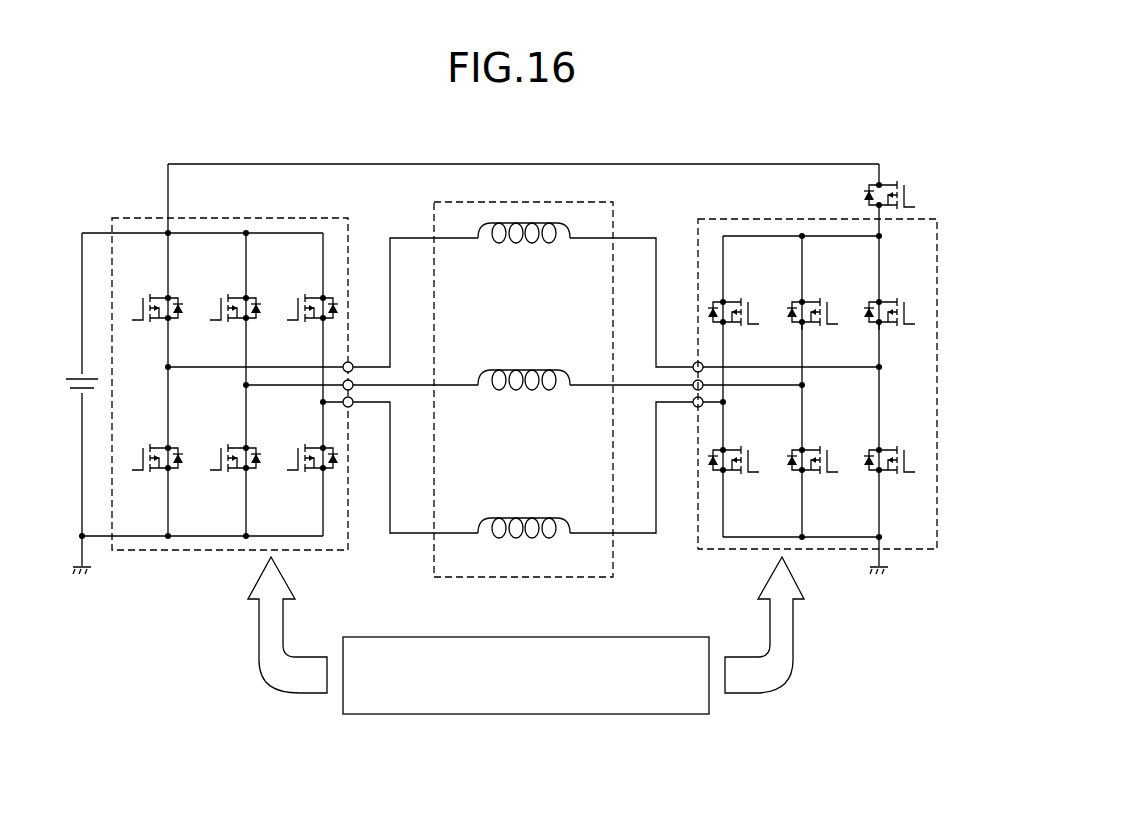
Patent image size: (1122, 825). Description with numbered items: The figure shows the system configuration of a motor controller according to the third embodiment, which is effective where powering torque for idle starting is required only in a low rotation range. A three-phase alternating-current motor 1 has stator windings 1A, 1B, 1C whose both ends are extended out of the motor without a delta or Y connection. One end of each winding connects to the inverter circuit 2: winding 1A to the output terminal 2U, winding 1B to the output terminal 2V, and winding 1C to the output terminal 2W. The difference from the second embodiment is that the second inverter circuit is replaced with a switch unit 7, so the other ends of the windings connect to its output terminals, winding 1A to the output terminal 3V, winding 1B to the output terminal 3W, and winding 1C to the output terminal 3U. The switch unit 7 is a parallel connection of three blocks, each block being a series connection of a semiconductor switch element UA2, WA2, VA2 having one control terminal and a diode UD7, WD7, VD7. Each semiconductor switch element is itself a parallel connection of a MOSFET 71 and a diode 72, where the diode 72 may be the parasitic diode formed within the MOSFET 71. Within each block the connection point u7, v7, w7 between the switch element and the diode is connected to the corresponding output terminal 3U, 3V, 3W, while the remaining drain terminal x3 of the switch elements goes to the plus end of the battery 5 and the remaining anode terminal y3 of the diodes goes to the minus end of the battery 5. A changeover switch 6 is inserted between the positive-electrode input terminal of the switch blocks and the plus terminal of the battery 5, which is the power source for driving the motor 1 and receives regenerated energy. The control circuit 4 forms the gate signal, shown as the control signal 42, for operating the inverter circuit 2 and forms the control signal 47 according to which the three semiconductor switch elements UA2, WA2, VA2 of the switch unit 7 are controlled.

The motor 1 is at (523, 370).
The stator winding 1A is at (514, 245).
The stator winding 1B is at (514, 395).
The stator winding 1C is at (514, 545).
The inverter circuit 2 is at (175, 557).
The output terminal 2U is at (352, 362).
The output terminal 2V is at (354, 389).
The output terminal 2W is at (351, 408).
The output terminal 3U is at (694, 408).
The output terminal 3V is at (695, 361).
The output terminal 3W is at (693, 387).
The control circuit 4 is at (661, 637).
The control signal 42 is at (259, 657).
The control signal 47 is at (793, 658).
The battery 5 is at (77, 374).
The changeover switch 6 is at (896, 182).
The switch unit 7 is at (817, 400).
The MOSFET 71 is at (875, 324).
The diode 72 is at (800, 324).
The drain terminal x3 is at (876, 236).
The anode terminal y3 is at (884, 538).
The connection point u7 is at (726, 402).
The connection point v7 is at (882, 367).
The connection point w7 is at (805, 385).
The semiconductor switch element UA2 is at (727, 300).
The semiconductor switch element WA2 is at (806, 300).
The semiconductor switch element VA2 is at (883, 300).
The diode UD7 is at (730, 470).
The diode WD7 is at (808, 470).
The diode VD7 is at (885, 470).